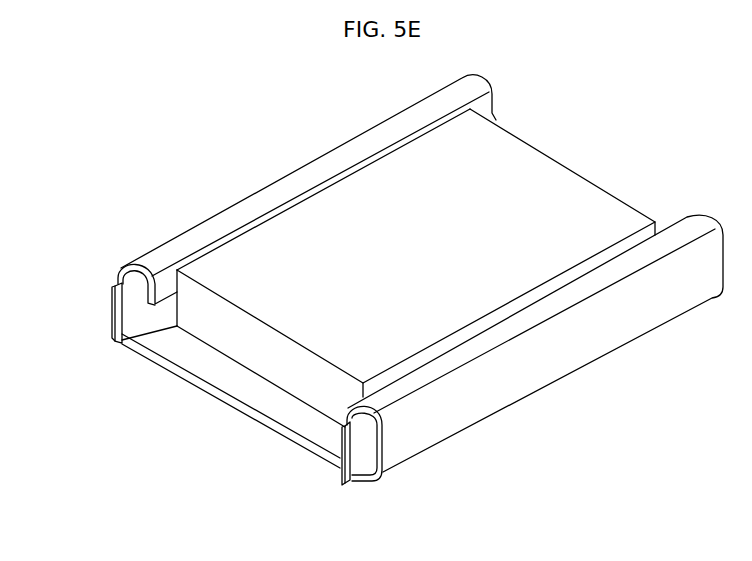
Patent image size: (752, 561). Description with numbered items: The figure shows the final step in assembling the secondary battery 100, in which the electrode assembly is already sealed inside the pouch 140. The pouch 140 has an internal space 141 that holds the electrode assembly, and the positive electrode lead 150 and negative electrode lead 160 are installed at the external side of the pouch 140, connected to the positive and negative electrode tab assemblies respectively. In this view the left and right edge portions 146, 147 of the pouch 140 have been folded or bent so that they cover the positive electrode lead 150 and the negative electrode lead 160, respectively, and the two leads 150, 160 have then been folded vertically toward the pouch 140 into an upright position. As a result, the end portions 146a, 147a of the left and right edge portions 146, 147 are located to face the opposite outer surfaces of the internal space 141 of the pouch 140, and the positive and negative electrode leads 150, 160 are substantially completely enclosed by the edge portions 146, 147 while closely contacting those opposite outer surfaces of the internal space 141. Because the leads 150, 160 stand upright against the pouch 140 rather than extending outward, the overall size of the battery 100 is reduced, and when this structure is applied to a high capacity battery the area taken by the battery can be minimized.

The secondary battery 100 is at (108, 102).
The pouch 140 is at (583, 150).
The internal space 141 is at (288, 320).
The left edge portion 146 is at (573, 352).
The end portion of the left edge portion 146a is at (338, 428).
The right edge portion 147 is at (257, 202).
The end portion of the right edge portion 147a is at (140, 303).
The positive electrode lead 150 is at (341, 485).
The negative electrode lead 160 is at (108, 340).